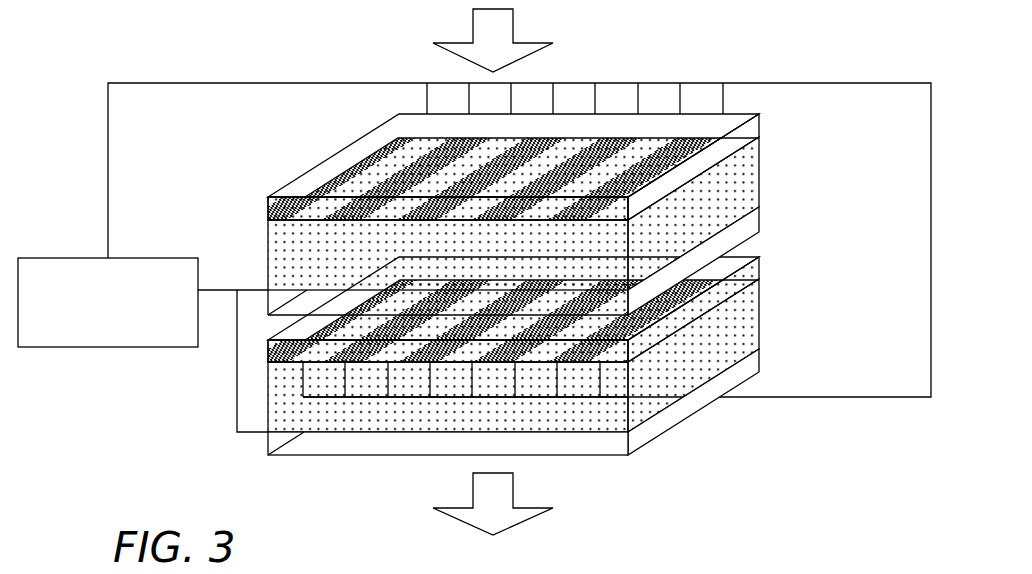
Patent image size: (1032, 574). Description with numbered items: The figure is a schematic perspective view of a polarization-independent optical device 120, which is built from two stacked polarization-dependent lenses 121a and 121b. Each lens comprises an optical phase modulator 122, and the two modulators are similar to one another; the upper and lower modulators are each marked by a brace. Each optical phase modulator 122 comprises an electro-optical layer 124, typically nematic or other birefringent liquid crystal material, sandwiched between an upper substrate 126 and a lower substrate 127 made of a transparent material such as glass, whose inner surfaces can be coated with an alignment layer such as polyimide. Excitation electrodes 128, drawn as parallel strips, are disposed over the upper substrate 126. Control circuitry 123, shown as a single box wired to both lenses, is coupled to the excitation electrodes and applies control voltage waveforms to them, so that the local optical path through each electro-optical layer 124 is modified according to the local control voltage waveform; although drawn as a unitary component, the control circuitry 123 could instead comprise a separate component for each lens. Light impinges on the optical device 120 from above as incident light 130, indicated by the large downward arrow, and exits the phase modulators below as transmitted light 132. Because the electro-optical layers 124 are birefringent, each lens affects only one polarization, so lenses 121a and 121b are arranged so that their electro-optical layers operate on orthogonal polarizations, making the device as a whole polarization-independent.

The polarization-independent optical device 120 is at (282, 50).
The polarization-dependent lens 121a is at (563, 170).
The polarization-dependent lens 121b is at (757, 463).
The optical phase modulator 122 is at (592, 267).
The control circuitry 123 is at (108, 348).
The electro-optical layer 124 is at (558, 163).
The upper substrate 126 is at (762, 129).
The lower substrate 127 is at (558, 213).
The excitation electrodes 128 is at (422, 160).
The incident light 130 is at (554, 44).
The transmitted light 132 is at (554, 508).